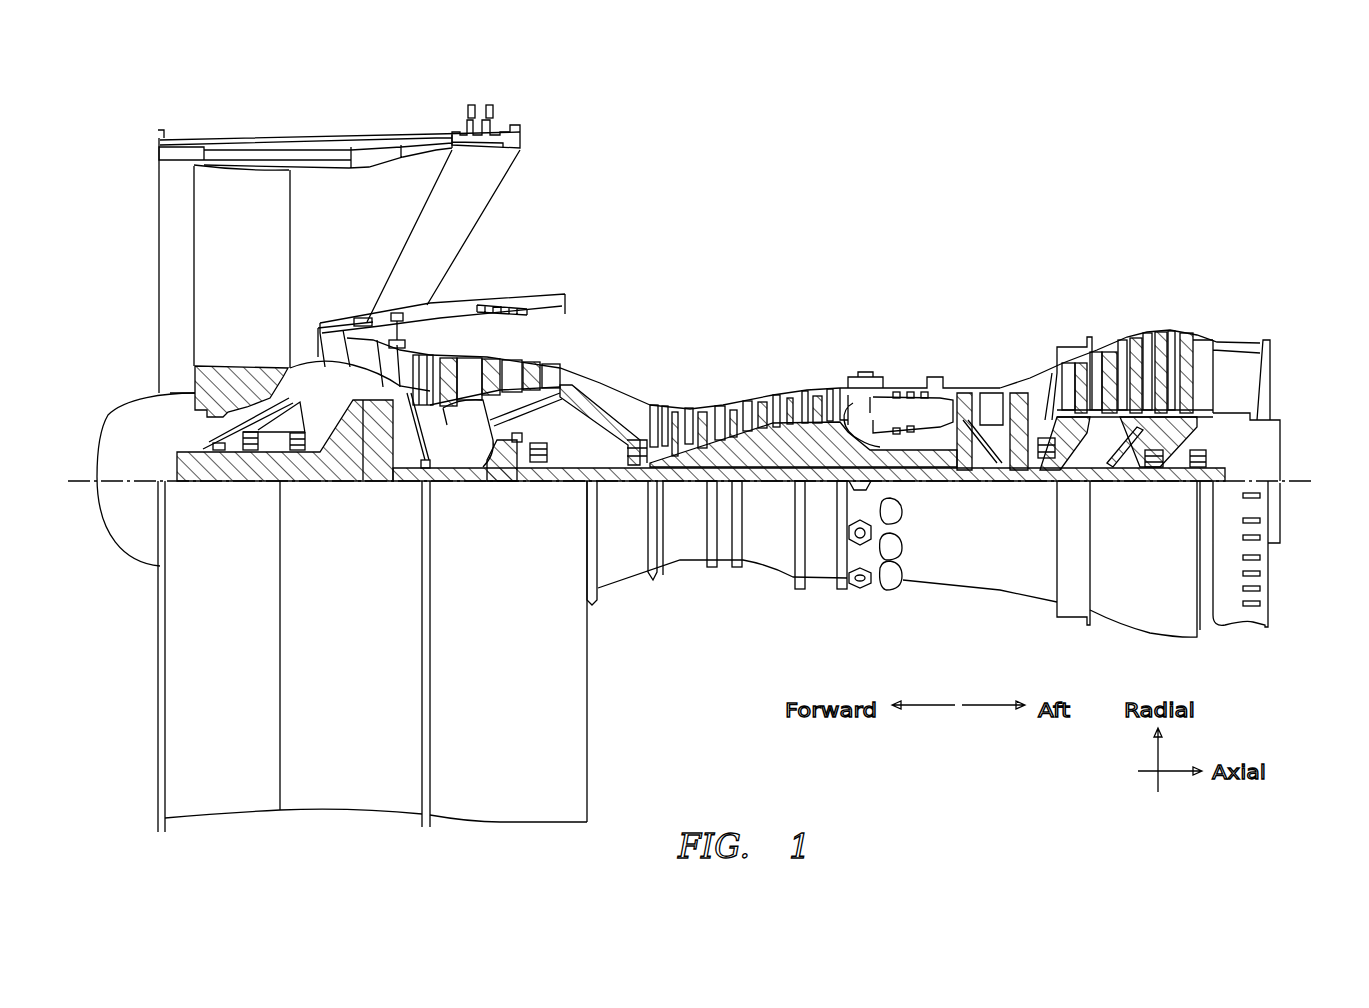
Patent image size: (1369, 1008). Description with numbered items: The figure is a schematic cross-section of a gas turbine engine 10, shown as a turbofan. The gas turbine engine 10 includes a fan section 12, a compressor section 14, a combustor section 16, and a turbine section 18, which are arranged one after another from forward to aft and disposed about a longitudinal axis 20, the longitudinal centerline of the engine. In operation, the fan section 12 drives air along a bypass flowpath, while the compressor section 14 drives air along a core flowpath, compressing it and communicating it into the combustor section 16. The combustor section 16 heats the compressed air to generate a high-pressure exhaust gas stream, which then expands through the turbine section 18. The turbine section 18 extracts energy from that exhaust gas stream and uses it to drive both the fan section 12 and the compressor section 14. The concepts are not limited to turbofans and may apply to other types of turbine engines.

The gas turbine engine 10 is at (1024, 190).
The fan section 12 is at (422, 117).
The compressor section 14 is at (432, 262).
The combustor section 16 is at (967, 262).
The turbine section 18 is at (1207, 262).
The longitudinal axis 20 is at (1300, 478).